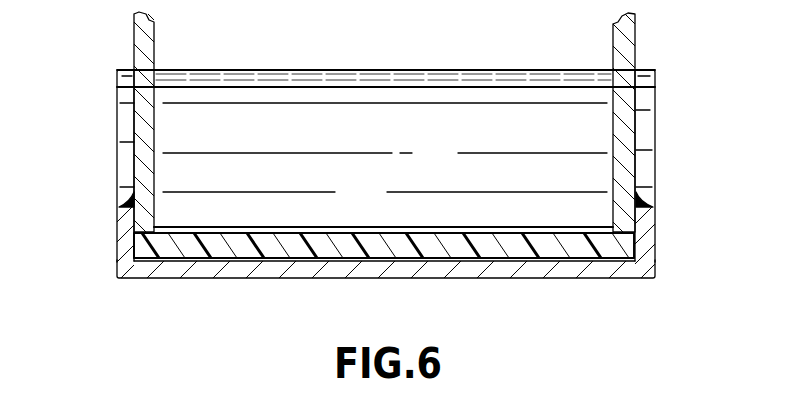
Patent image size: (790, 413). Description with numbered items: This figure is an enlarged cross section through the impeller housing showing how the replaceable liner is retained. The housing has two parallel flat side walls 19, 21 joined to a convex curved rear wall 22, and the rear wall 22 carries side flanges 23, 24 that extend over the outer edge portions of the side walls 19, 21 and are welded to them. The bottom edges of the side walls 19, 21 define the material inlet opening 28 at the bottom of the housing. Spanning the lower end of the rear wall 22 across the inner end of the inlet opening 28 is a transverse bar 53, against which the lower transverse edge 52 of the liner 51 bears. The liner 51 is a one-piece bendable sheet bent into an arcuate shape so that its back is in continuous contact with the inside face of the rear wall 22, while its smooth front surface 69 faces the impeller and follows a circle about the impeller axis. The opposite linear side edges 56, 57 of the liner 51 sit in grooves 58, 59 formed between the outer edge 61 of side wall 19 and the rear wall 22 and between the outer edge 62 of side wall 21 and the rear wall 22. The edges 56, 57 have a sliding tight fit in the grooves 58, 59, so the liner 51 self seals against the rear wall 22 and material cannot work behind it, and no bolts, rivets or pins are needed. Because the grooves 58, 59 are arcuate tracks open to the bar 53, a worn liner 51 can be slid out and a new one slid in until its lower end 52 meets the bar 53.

The side wall 19 is at (146, 117).
The side wall 21 is at (625, 130).
The rear wall 22 is at (342, 268).
The side flange 23 is at (128, 231).
The side flange 24 is at (648, 230).
The material inlet opening 28 is at (385, 105).
The liner 51 is at (432, 222).
The lower transverse edge 52 is at (381, 85).
The transverse bar 53 is at (336, 76).
The side edge 56 is at (146, 248).
The side edge 57 is at (632, 247).
The groove 58 is at (152, 262).
The groove 59 is at (627, 262).
The outer edge 61 is at (134, 195).
The outer edge 62 is at (636, 198).
The front surface 69 is at (333, 232).